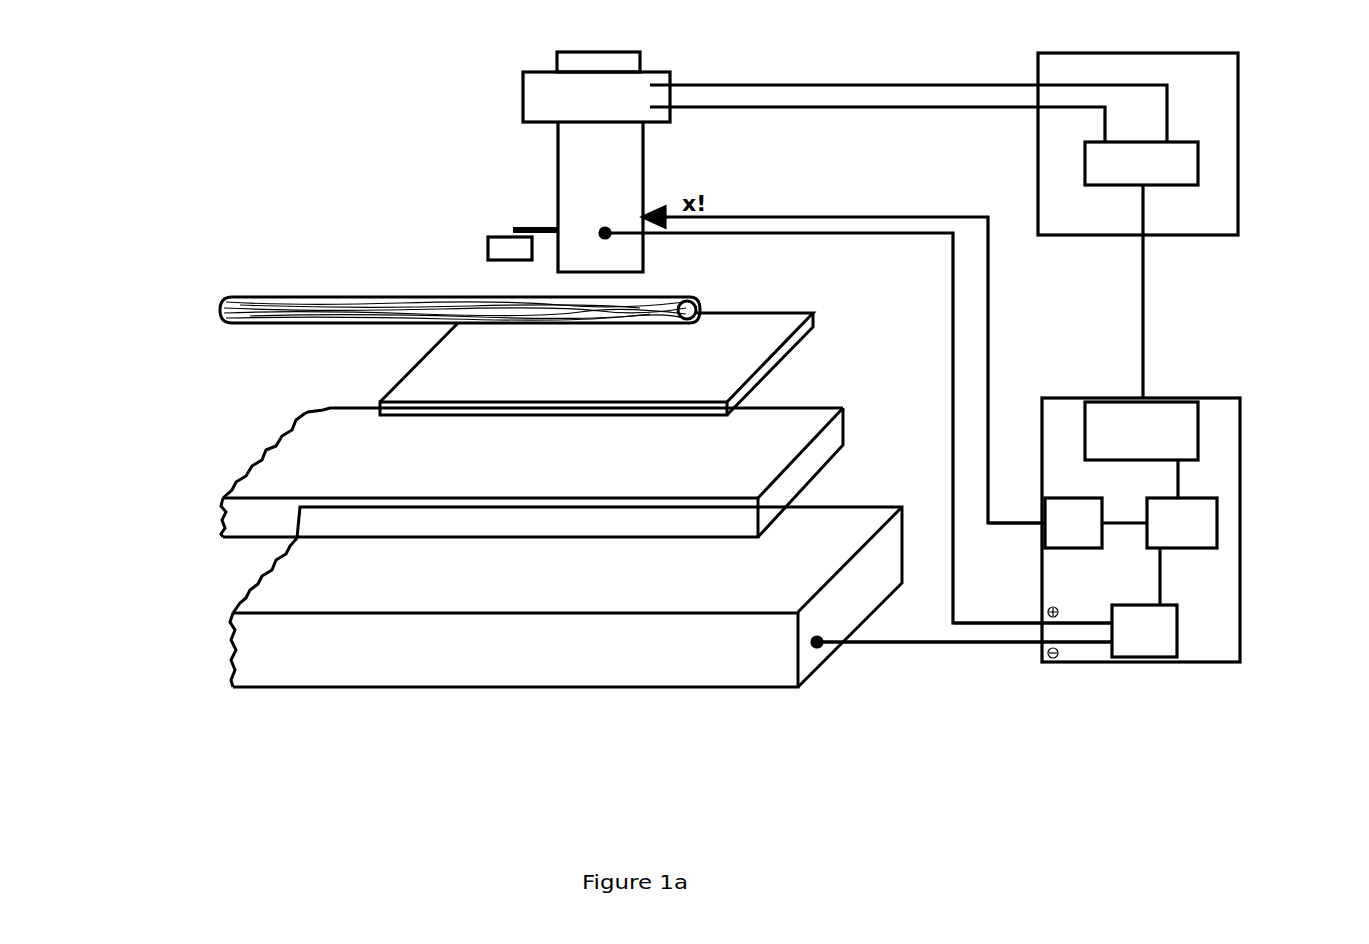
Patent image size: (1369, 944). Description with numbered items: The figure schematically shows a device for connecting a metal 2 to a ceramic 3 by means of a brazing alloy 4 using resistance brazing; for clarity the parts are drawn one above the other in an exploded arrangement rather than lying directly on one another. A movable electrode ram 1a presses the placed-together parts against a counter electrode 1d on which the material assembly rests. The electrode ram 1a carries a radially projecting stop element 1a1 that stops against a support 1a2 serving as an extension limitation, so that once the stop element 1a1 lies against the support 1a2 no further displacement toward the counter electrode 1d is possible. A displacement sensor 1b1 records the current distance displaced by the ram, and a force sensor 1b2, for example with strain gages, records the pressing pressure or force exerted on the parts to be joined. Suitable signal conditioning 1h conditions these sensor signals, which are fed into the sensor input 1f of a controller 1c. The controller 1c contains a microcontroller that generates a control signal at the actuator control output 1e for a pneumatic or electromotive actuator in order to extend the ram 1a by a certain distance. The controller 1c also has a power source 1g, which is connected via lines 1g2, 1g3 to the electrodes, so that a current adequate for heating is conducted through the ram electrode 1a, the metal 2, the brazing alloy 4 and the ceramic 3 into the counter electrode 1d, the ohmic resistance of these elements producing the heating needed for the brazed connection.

The electrode ram 1a is at (593, 160).
The stop element 1a1 is at (513, 231).
The support 1a2 is at (505, 252).
The displacement sensor 1b1 is at (908, 99).
The force sensor 1b2 is at (877, 124).
The controller 1c is at (1230, 490).
The counter electrode 1d is at (283, 663).
The actuator control output 1e is at (1016, 510).
The sensor input 1f is at (1198, 430).
The power source 1g is at (1177, 638).
The line 1g2 is at (964, 656).
The line 1g3 is at (1032, 610).
The signal conditioning 1h is at (1220, 137).
The metal 2 is at (220, 317).
The ceramic 3 is at (275, 520).
The brazing alloy 4 is at (460, 382).